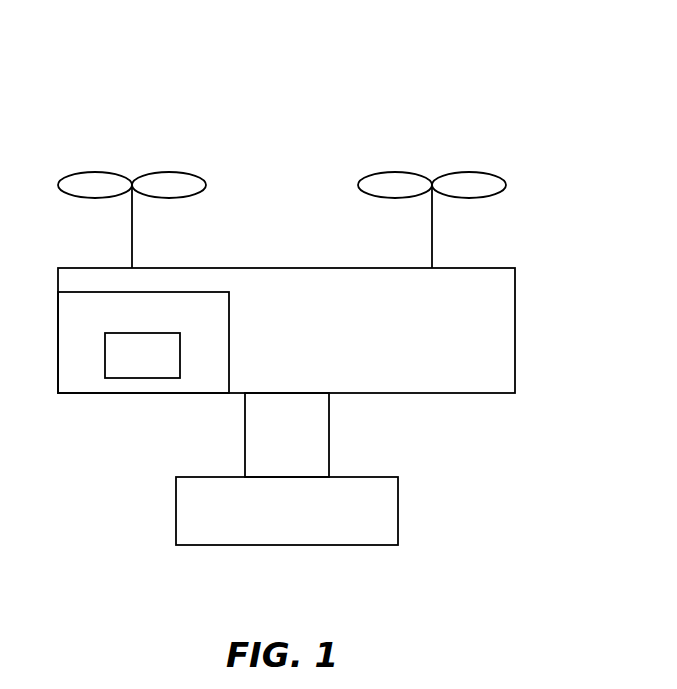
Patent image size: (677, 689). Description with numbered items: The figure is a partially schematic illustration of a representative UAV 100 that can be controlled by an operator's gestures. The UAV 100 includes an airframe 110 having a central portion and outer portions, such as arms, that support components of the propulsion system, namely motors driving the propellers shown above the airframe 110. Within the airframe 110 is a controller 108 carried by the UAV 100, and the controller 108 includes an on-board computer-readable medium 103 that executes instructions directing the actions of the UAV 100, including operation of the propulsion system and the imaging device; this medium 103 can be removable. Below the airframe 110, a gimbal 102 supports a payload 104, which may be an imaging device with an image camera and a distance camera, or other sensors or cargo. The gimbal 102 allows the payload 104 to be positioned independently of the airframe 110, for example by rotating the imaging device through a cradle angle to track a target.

The UAV 100 is at (563, 66).
The gimbal 102 is at (287, 435).
The on-board computer-readable medium 103 is at (142, 355).
The payload 104 is at (287, 511).
The controller 108 is at (143, 342).
The airframe 110 is at (508, 268).